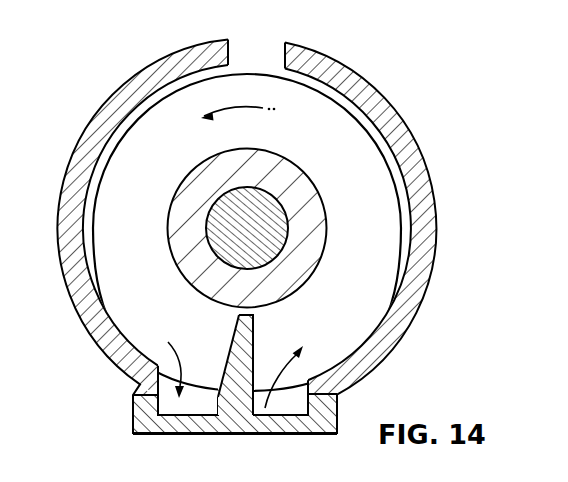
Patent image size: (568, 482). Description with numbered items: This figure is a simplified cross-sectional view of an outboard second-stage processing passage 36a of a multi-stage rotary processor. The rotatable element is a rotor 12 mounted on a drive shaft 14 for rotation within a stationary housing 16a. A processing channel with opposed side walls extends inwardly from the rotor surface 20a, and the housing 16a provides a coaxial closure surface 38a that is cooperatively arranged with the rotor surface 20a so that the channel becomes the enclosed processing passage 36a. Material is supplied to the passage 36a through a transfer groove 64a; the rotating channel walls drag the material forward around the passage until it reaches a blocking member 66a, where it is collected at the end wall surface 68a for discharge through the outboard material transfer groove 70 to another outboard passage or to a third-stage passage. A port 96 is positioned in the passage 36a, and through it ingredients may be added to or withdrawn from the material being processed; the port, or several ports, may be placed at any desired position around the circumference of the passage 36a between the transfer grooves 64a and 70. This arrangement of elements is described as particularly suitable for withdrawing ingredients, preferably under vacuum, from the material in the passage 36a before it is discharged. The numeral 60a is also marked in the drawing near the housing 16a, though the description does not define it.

The housing 16a is at (366, 83).
The rotor surface 20a is at (125, 128).
The closure surface 38a is at (78, 258).
The second-stage processing passage 36a is at (368, 190).
The rotor 12 is at (193, 262).
The drive shaft 14 is at (278, 236).
The port 96 is at (258, 53).
The cover 60a is at (8, 0).
The end wall surface 68a is at (228, 354).
The blocking member 66a is at (237, 390).
The material transfer groove 70 is at (190, 405).
The transfer groove 64a is at (293, 403).